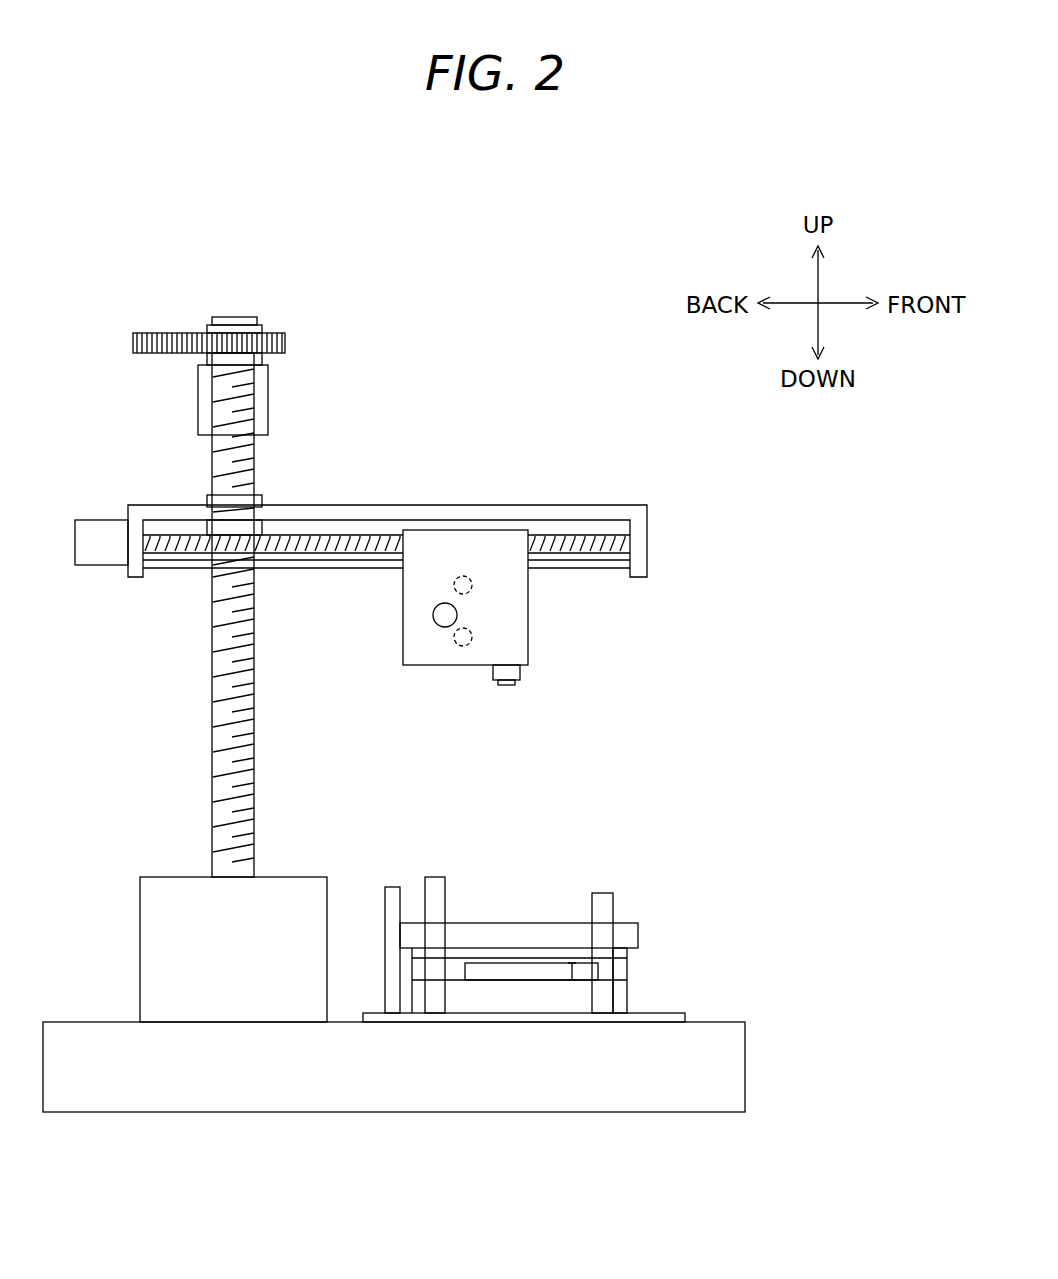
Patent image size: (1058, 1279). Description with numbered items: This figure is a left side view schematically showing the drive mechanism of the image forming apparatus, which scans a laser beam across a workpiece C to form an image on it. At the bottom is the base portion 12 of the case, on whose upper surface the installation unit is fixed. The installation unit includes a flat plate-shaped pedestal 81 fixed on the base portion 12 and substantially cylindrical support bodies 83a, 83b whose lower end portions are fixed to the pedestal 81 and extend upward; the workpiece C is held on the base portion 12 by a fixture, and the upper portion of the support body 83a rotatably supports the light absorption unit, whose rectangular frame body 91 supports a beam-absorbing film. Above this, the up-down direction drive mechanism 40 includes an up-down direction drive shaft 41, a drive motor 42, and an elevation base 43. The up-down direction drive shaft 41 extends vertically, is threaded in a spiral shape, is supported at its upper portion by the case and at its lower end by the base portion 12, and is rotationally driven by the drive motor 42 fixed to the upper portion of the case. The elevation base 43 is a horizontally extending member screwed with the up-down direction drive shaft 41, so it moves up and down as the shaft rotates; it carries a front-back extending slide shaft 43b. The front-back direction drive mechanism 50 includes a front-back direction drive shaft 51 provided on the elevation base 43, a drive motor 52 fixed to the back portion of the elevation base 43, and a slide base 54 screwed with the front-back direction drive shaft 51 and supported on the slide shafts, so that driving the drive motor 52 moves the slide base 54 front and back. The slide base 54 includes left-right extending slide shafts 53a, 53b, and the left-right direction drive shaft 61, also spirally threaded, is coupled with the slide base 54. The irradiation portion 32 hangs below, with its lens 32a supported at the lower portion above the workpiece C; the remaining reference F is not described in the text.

The base portion 12 is at (745, 1070).
The irradiation portion 32 is at (522, 673).
The lens 32a is at (507, 685).
The up-down direction drive mechanism 40 is at (245, 545).
The up-down direction drive shaft 41 is at (213, 670).
The drive motor 42 is at (212, 433).
The elevation base 43 is at (393, 505).
The slide shaft 43b is at (312, 570).
The front-back direction drive mechanism 50 is at (445, 606).
The front-back direction drive shaft 51 is at (563, 535).
The drive motor 52 is at (103, 567).
The slide shaft 53a is at (470, 582).
The slide shaft 53b is at (470, 637).
The slide base 54 is at (495, 612).
The left-right direction drive shaft 61 is at (432, 615).
The pedestal 81 is at (660, 1022).
The support body 83a is at (432, 1005).
The support body 83b is at (600, 1005).
The frame body 91 is at (505, 930).
The workpiece C is at (582, 972).
The liquid F is at (572, 968).